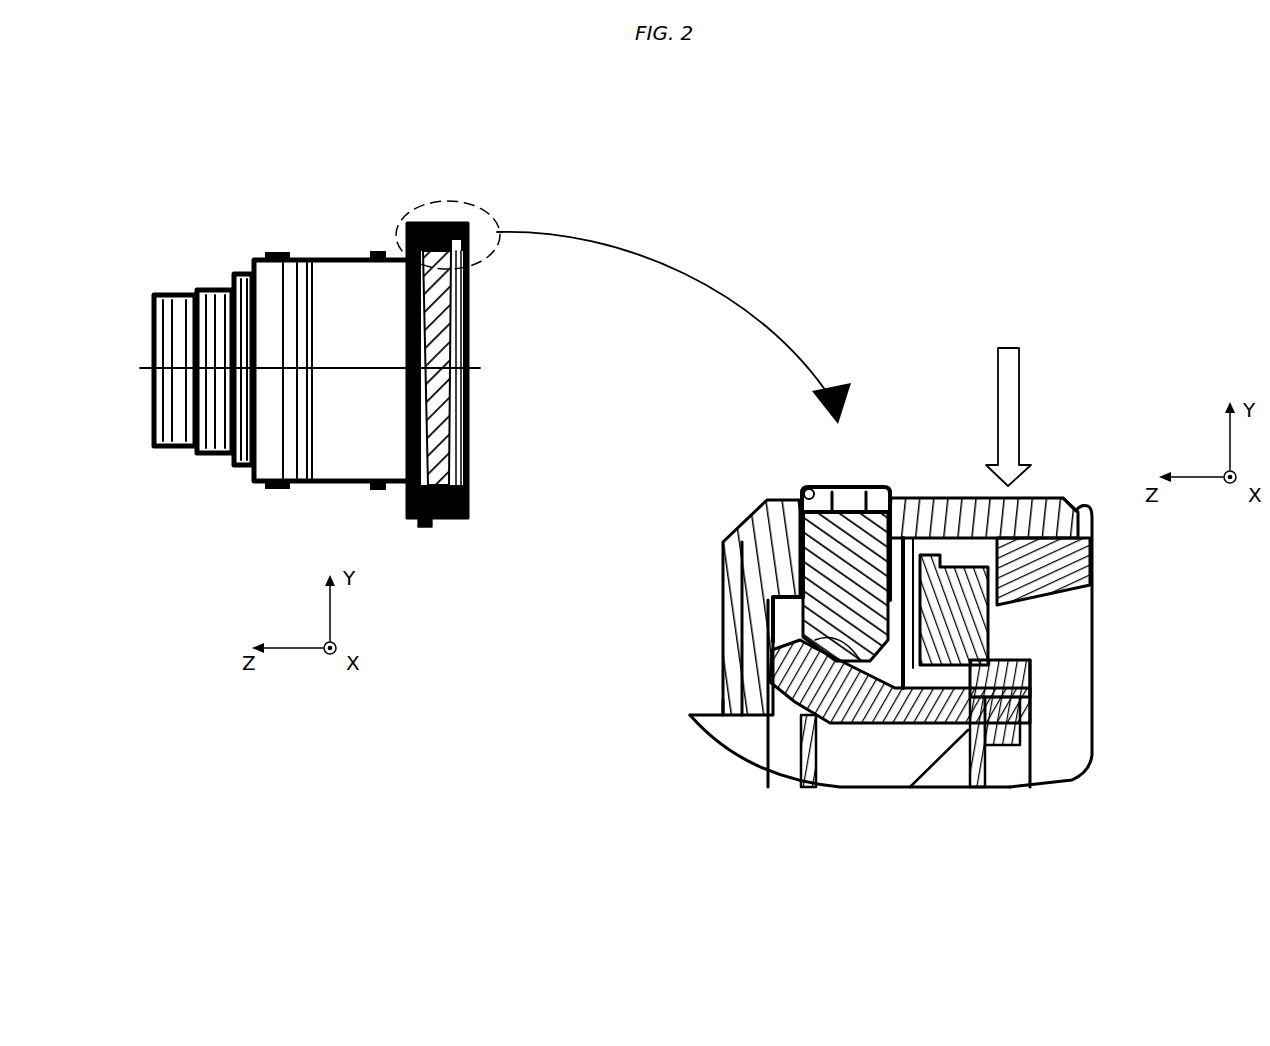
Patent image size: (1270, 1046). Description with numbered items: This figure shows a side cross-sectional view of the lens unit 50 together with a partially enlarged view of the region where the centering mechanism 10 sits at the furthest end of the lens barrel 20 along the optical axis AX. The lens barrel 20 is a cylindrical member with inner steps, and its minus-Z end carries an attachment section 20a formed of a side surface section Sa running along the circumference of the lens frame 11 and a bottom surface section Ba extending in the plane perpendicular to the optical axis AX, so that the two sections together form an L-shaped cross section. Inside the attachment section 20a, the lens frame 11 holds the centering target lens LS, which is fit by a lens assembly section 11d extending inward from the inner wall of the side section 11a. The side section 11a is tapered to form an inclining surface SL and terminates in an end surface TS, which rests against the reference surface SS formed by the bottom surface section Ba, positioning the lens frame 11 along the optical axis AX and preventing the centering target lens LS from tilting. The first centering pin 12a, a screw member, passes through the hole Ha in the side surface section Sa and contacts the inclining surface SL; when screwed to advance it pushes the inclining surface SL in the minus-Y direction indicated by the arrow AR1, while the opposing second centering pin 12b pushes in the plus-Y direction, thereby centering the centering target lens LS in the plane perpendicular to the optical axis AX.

The lens unit 50 is at (366, 200).
The lens barrel 20 is at (274, 256).
The attachment section 20a is at (762, 545).
The centering mechanism 10 is at (433, 216).
The lens frame 11 is at (458, 248).
The side section 11a is at (808, 790).
The lens assembly section 11d is at (1014, 746).
The first centering pin 12a is at (430, 218).
The second centering pin 12b is at (425, 529).
The centering target lens LS is at (445, 356).
The optical axis AX is at (375, 372).
The hole Ha is at (810, 474).
The side surface section Sa is at (940, 498).
The arrow AR1 is at (1015, 406).
The inclining surface SL is at (855, 652).
The bottom surface section Ba is at (742, 647).
The end surface TS is at (765, 672).
The reference surface SS is at (805, 716).